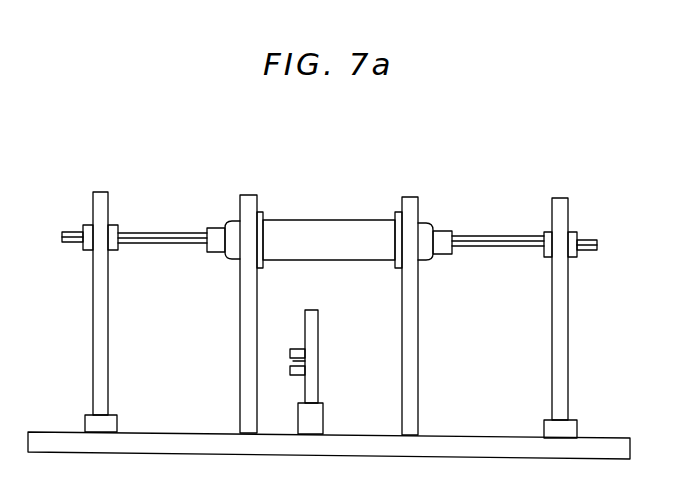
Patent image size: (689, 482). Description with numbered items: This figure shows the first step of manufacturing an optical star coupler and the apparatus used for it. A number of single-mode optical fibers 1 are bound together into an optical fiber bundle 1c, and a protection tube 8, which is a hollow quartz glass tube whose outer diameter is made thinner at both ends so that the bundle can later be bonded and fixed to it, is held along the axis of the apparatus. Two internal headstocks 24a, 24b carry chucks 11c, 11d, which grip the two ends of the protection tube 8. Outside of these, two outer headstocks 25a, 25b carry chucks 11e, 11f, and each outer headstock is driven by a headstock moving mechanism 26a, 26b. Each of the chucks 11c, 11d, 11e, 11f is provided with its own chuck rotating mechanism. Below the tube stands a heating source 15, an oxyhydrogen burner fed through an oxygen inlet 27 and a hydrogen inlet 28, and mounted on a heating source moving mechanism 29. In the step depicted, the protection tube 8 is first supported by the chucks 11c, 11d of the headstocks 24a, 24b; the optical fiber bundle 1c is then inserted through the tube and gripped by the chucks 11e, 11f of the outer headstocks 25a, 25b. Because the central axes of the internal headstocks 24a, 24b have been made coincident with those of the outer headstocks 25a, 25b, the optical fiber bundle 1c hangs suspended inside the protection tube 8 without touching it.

The optical fibers 1 is at (70, 243).
The optical fiber bundle 1c is at (163, 246).
The protection tube 8 is at (332, 220).
The chuck 11c is at (263, 212).
The chuck 11d is at (394, 212).
The chuck 11e is at (113, 226).
The chuck 11f is at (544, 232).
The heating source 15 is at (319, 333).
The headstock 24a is at (249, 195).
The headstock 24b is at (413, 197).
The headstock 25a is at (100, 192).
The headstock 25b is at (562, 198).
The headstock moving mechanism 26a is at (118, 421).
The headstock moving mechanism 26b is at (578, 428).
The oxygen inlet 27 is at (292, 352).
The hydrogen inlet 28 is at (296, 378).
The heating source moving mechanism 29 is at (324, 417).